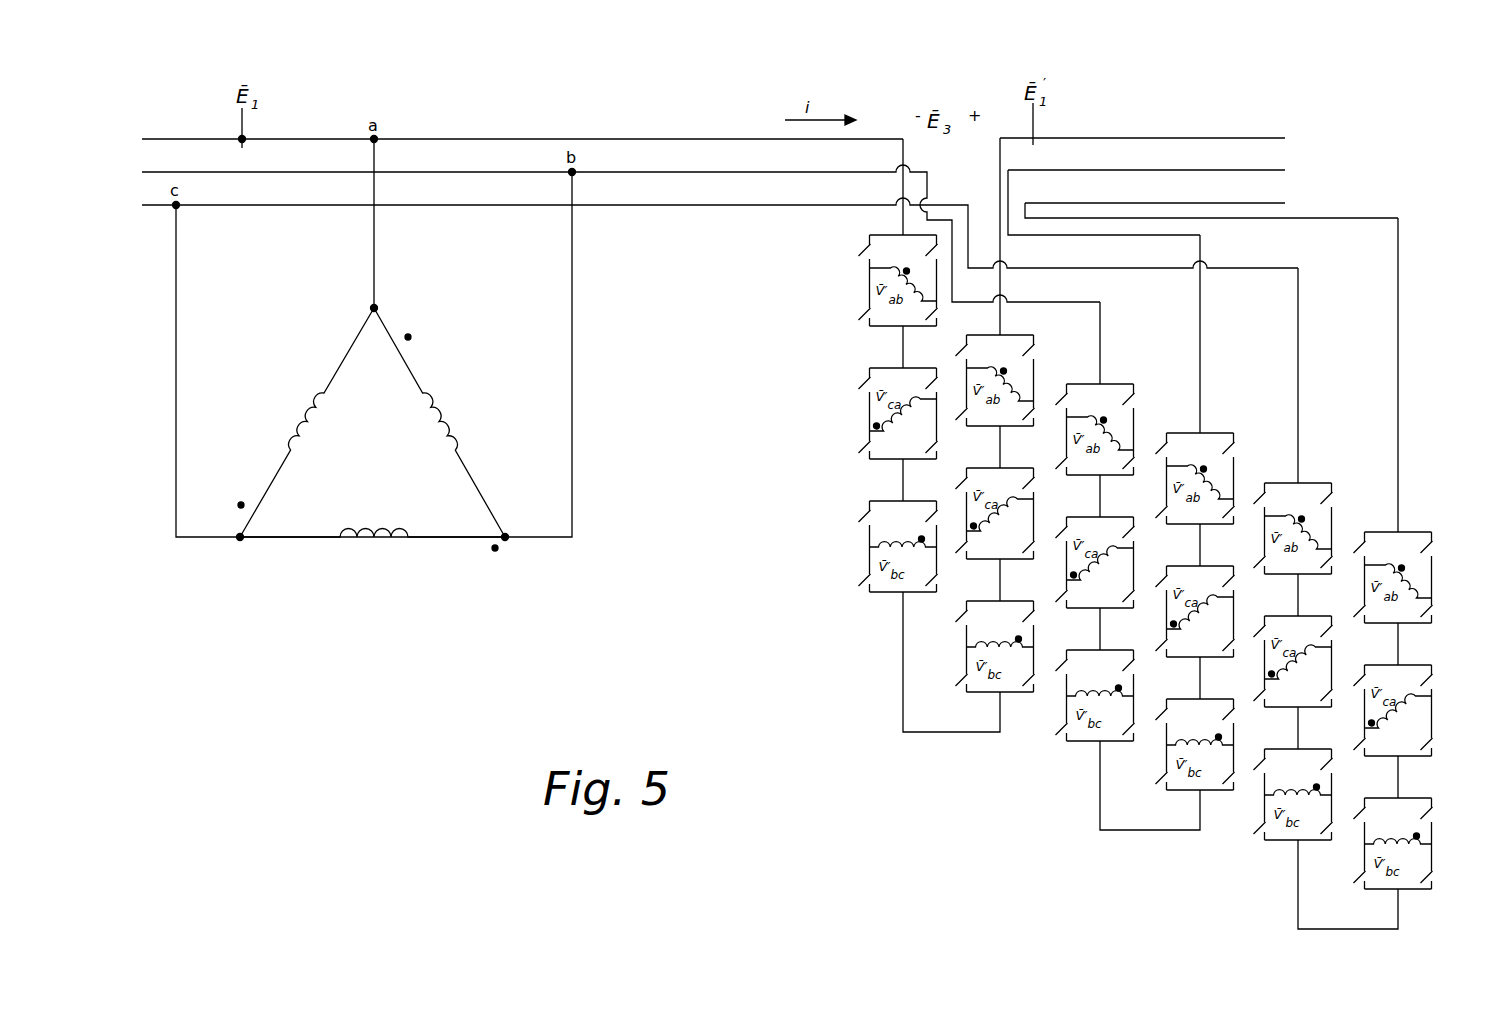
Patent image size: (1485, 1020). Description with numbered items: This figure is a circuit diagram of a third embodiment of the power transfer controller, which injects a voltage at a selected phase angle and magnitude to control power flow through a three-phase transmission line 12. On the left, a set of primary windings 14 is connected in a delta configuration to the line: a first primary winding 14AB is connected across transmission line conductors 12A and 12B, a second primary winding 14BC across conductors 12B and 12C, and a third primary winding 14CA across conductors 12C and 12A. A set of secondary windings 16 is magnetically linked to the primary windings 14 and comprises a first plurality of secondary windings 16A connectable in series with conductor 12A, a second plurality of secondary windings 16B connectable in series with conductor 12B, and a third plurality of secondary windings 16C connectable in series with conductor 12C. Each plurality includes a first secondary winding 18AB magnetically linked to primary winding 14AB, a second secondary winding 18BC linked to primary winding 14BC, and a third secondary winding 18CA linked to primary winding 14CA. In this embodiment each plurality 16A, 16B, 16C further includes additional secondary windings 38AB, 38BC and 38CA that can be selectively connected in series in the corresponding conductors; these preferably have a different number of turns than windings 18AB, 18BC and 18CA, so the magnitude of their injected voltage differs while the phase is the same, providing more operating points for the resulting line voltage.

The three-phase transmission line 12 is at (770, 190).
The transmission line conductor 12A is at (276, 139).
The transmission line conductor 12B is at (405, 172).
The transmission line conductor 12C is at (422, 205).
The set of primary windings 14 is at (374, 373).
The first primary winding 14AB is at (427, 398).
The second primary winding 14BC is at (437, 539).
The third primary winding 14CA is at (305, 411).
The set of secondary windings 16 is at (713, 286).
The first plurality of secondary windings 16A is at (990, 757).
The second plurality of secondary windings 16B is at (1146, 836).
The third plurality of secondary windings 16C is at (1295, 887).
The first secondary winding 18AB is at (907, 305).
The third secondary winding 18CA is at (885, 432).
The second secondary winding 18BC is at (876, 547).
The additional secondary winding 38AB is at (1022, 398).
The additional secondary winding 38CA is at (1012, 505).
The additional secondary winding 38BC is at (975, 648).